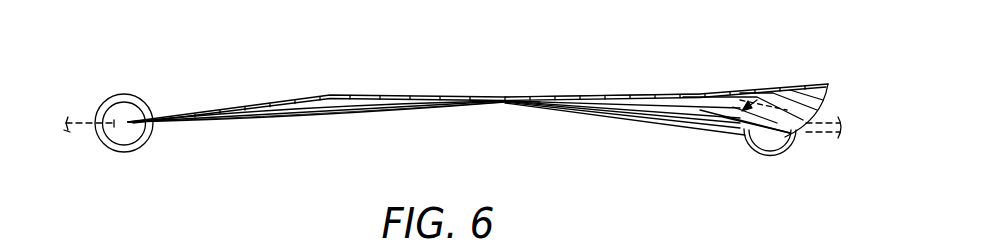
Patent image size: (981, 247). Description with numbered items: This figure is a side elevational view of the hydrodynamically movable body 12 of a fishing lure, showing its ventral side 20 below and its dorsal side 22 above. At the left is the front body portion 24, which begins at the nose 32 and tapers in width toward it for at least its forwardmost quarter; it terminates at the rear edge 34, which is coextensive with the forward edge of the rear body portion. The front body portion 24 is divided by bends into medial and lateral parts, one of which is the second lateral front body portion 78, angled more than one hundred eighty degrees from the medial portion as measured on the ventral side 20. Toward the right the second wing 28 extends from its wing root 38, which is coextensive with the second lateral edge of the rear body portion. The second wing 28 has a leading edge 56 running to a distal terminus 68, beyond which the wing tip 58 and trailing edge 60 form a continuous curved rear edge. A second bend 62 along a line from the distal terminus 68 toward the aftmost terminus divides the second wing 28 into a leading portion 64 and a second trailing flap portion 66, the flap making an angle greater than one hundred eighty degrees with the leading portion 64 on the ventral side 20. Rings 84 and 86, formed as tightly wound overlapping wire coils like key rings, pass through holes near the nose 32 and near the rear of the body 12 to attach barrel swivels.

The body 12 is at (416, 122).
The ventral side 20 is at (557, 116).
The dorsal side 22 is at (533, 86).
The front body portion 24 is at (290, 122).
The second wing 28 is at (792, 152).
The nose 32 is at (148, 143).
The rear edge 34 is at (478, 103).
The wing root 38 is at (630, 120).
The leading edge 56 is at (588, 95).
The wing tip 58 is at (742, 93).
The trailing edge 60 is at (830, 90).
The second bend 62 is at (727, 128).
The leading portion 64 is at (683, 117).
The second trailing flap portion 66 is at (778, 152).
The distal terminus 68 is at (683, 95).
The second lateral front body portion 78 is at (335, 96).
The ring 84 is at (106, 148).
The ring 86 is at (802, 137).